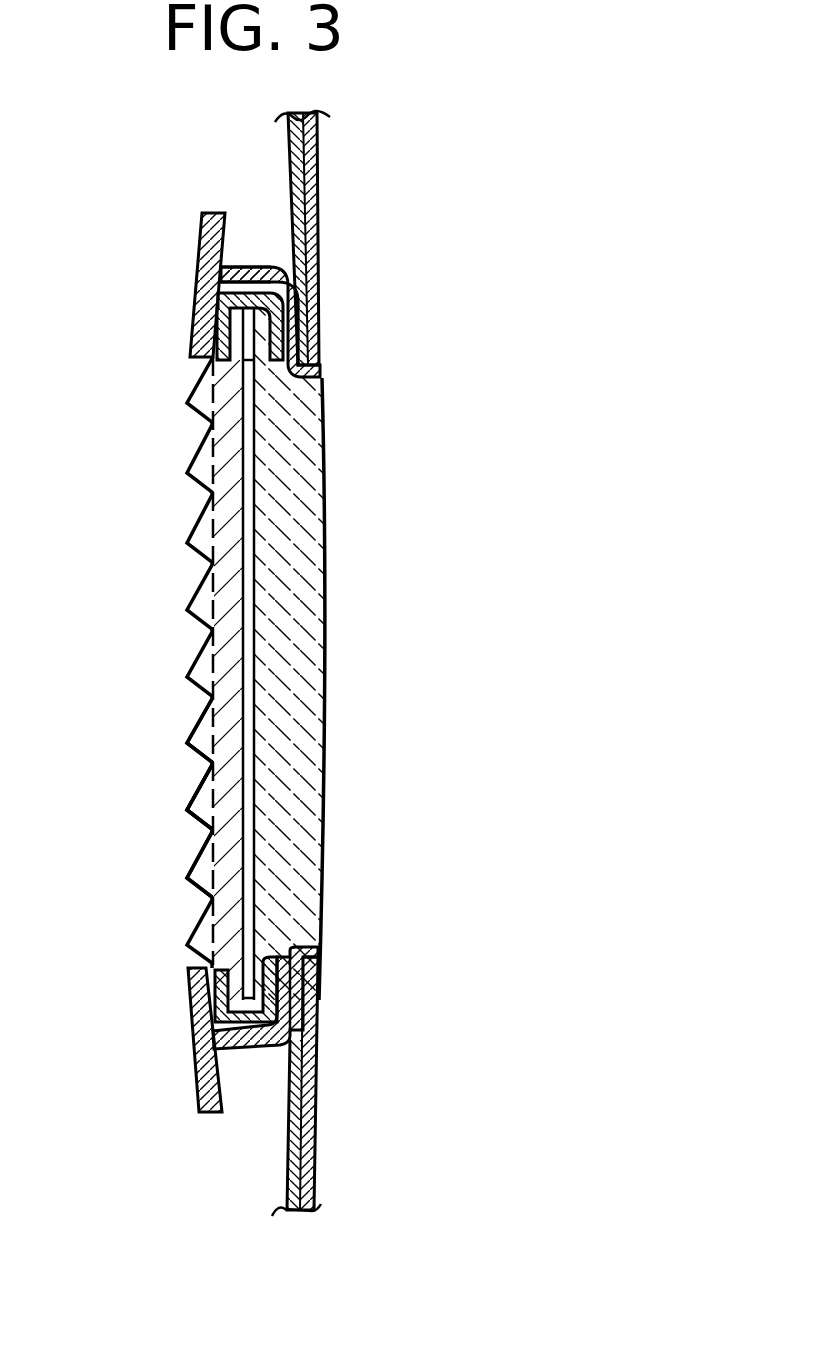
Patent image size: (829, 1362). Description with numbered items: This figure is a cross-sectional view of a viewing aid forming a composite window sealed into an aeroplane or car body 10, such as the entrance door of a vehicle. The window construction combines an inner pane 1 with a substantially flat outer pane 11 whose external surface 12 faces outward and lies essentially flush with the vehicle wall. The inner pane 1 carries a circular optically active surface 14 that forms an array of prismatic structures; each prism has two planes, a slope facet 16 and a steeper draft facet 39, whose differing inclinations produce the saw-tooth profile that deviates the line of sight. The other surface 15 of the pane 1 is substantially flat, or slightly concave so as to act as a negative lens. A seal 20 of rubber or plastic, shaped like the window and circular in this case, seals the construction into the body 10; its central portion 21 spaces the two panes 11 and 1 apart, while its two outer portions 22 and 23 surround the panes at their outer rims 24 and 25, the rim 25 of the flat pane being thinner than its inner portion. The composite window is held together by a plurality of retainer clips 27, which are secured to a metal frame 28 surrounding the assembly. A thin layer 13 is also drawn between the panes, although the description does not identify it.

The pane 1 is at (237, 567).
The aeroplane or car body 10 is at (318, 138).
The substantially flat pane 11 is at (288, 696).
The external surface 12 is at (325, 572).
The inner plate 13 is at (247, 752).
The optically active surface 14 is at (197, 656).
The other surface 15 is at (256, 474).
The slope facet 16 is at (197, 728).
The seal 20 is at (280, 263).
The central portion 21 is at (300, 299).
The outer portion 22 is at (195, 336).
The outer portion 23 is at (282, 318).
The outer rim 24 is at (212, 998).
The outer rim 25 is at (256, 991).
The retainer clip 27 is at (252, 267).
The metal frame 28 is at (199, 1085).
The draft facet 39 is at (198, 818).